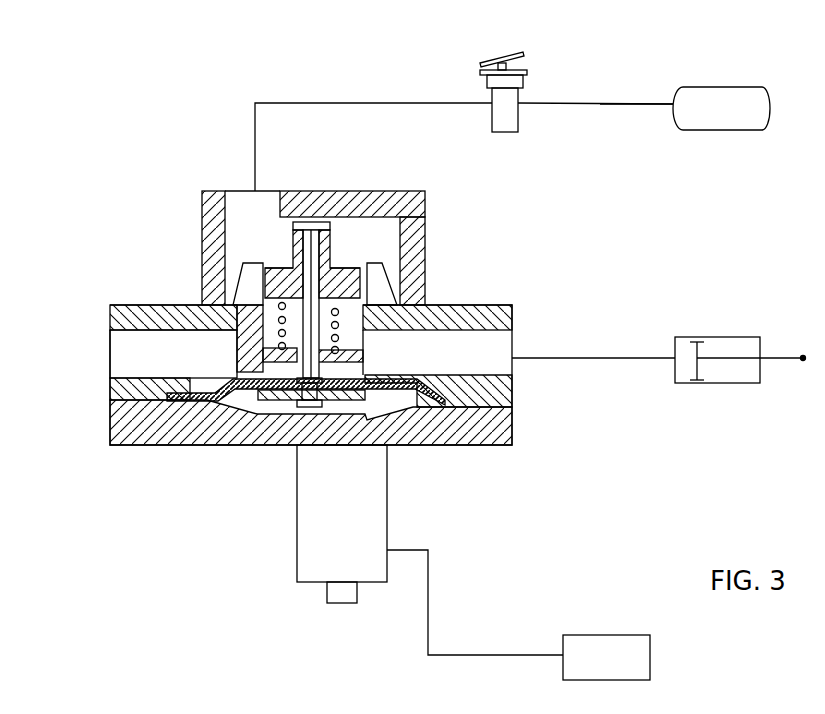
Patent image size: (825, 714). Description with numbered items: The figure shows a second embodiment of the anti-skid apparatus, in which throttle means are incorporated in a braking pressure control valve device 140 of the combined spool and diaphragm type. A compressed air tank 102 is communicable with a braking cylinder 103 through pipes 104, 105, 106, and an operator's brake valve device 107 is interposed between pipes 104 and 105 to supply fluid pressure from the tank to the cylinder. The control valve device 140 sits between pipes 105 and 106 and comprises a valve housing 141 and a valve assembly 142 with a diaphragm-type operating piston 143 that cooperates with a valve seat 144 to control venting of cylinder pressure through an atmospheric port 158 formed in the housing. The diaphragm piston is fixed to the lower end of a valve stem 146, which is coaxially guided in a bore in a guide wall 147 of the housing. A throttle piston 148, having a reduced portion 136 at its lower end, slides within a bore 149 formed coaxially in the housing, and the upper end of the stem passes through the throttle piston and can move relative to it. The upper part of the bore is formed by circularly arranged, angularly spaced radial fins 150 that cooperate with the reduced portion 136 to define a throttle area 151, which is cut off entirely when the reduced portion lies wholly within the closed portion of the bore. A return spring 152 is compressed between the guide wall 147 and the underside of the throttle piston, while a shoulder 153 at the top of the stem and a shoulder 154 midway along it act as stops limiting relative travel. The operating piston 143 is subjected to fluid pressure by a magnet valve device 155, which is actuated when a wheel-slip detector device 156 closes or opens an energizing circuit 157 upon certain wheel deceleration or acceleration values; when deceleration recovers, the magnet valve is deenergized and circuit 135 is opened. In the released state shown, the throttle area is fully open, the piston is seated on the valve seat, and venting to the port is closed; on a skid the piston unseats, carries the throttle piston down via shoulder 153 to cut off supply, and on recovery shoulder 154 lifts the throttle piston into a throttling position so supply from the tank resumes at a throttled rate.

The compressed air tank 102 is at (742, 122).
The braking cylinder 103 is at (720, 350).
The pipe 104 is at (583, 102).
The pipe 105 is at (385, 100).
The pipe 106 is at (615, 355).
The operator's brake valve device 107 is at (505, 120).
The circuit 135 is at (270, 260).
The reduced portion 136 is at (345, 265).
The braking pressure control valve device 140 is at (530, 457).
The valve housing 141 is at (500, 318).
The valve assembly 142 is at (150, 325).
The operating piston 143 is at (226, 400).
The valve seat 144 is at (243, 360).
The valve stem 146 is at (275, 440).
The guide wall 147 is at (363, 362).
The throttle piston 148 is at (290, 225).
The bore 149 is at (412, 265).
The radial fins 150 is at (257, 262).
The throttle area 151 is at (273, 297).
The return spring 152 is at (268, 305).
The shoulder 153 is at (312, 230).
The shoulder 154 is at (395, 300).
The magnet valve device 155 is at (315, 528).
The wheel-slip detector device 156 is at (603, 660).
The energizing circuit 157 is at (428, 613).
The atmospheric port 158 is at (127, 368).